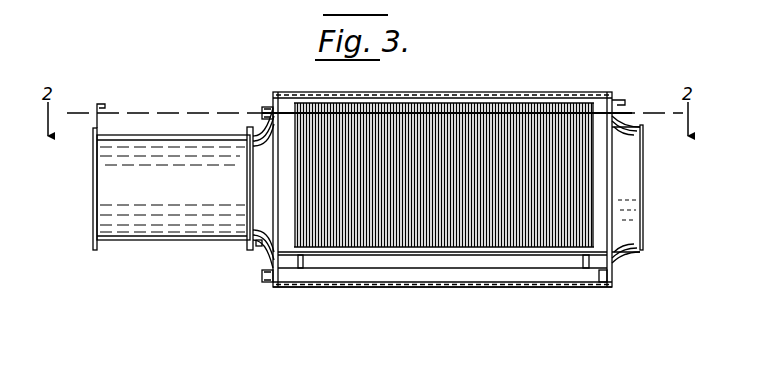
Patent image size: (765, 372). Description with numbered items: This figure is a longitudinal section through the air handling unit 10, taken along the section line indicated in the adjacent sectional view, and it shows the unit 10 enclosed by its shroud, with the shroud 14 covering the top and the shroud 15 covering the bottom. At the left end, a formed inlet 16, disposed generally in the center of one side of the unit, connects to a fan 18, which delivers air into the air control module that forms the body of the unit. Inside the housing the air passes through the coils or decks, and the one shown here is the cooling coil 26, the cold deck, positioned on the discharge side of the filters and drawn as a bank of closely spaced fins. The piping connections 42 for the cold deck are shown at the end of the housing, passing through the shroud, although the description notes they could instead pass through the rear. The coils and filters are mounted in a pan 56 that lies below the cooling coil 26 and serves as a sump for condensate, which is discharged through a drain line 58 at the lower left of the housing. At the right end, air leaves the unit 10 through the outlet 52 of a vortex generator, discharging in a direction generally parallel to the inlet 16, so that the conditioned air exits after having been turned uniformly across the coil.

The unit 10 is at (512, 76).
The top shroud 14 is at (463, 93).
The bottom shroud 15 is at (424, 286).
The inlet 16 is at (263, 211).
The fan 18 is at (150, 233).
The cooling coil 26 is at (367, 113).
The piping connections for cold deck 42 is at (262, 112).
The outlet 52 is at (637, 192).
The pan 56 is at (378, 261).
The drain line 58 is at (263, 281).